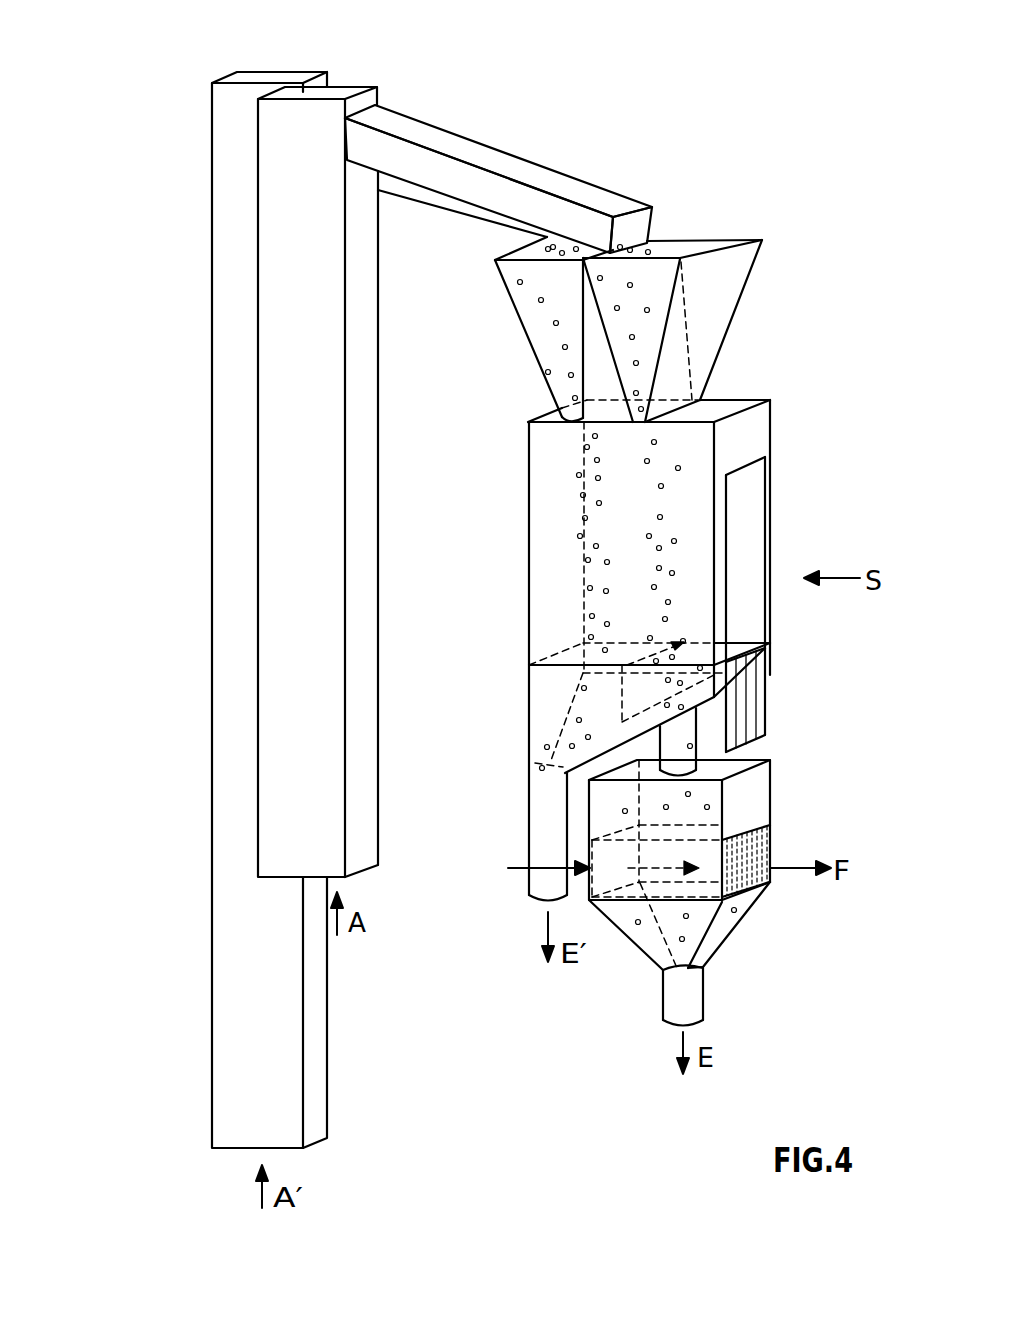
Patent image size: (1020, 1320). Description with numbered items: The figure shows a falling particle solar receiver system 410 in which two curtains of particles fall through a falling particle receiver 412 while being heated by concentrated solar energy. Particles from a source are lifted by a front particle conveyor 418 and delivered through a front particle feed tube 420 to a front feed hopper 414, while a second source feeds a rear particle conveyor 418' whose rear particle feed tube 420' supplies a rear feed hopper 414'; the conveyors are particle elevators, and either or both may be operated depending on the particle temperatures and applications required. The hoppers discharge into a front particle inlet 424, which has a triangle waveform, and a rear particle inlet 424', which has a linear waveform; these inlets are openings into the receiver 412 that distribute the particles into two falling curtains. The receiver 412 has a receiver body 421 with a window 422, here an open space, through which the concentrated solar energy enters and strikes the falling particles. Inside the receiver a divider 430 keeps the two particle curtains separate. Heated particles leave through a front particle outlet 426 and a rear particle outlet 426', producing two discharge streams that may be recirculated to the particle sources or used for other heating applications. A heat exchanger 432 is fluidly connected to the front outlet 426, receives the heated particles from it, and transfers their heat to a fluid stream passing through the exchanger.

The falling particle solar receiver system 410 is at (162, 64).
The rear particle conveyor 418' is at (221, 610).
The front particle conveyor 418 is at (365, 482).
The front particle feed tube 420 is at (498, 169).
The rear particle feed tube 420' is at (462, 238).
The front feed hopper 414 is at (695, 296).
The rear feed hopper 414' is at (512, 329).
The front particle inlet 424 is at (756, 352).
The rear particle inlet 424' is at (567, 508).
The receiver body 421 is at (528, 447).
The falling particle receiver 412 is at (772, 418).
The window 422 is at (767, 532).
The divider 430 is at (653, 655).
The front particle outlet 426 is at (761, 742).
The rear particle outlet 426' is at (501, 783).
The heat exchanger 432 is at (773, 813).